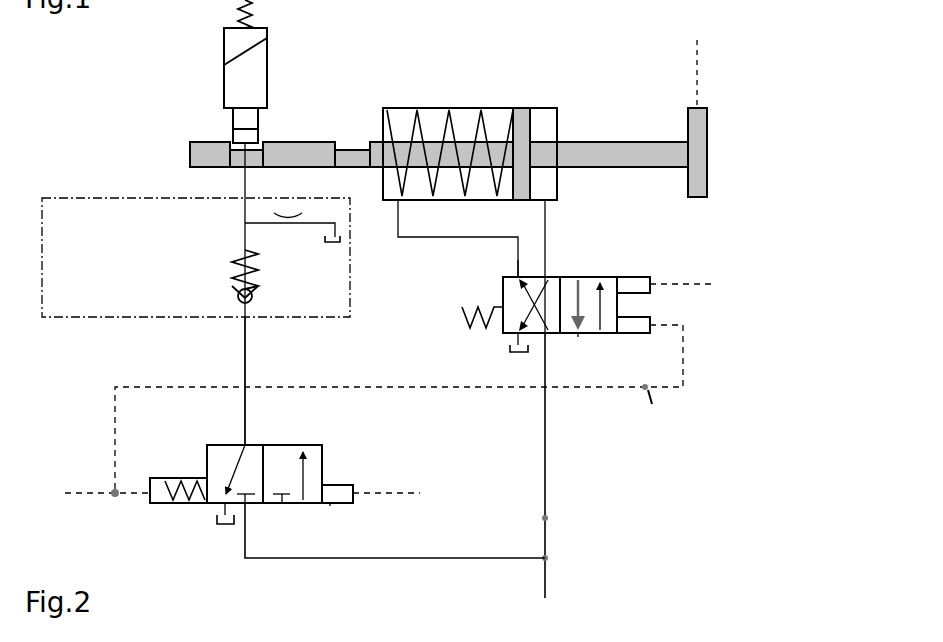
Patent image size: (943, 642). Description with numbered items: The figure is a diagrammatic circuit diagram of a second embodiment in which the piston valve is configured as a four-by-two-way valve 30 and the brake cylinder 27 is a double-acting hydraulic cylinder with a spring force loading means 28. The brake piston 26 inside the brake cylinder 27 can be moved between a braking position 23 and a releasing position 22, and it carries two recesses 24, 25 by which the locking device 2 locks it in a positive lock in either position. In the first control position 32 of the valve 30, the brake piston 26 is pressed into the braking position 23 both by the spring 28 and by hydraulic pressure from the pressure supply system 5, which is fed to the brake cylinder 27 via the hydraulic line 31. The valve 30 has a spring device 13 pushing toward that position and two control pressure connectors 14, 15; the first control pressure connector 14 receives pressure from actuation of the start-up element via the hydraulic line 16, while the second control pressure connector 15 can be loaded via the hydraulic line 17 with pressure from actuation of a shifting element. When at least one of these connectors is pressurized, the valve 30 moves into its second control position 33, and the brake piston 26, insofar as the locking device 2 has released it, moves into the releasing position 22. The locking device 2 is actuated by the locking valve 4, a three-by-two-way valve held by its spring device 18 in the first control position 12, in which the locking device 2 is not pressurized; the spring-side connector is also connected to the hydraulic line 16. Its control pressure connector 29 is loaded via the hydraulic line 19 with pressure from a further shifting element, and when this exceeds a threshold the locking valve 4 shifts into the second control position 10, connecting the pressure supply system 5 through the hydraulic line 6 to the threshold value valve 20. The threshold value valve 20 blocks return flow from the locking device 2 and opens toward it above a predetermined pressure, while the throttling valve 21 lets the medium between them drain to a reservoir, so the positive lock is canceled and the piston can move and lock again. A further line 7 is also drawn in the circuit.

The locking device 2 is at (297, 54).
The locking valve 4 is at (400, 444).
The pressure supply system 5 is at (601, 465).
The hydraulic line 6 is at (127, 381).
The hydraulic line 7 is at (584, 237).
The second control position 10 is at (326, 471).
The first control position 12 is at (175, 428).
The spring device 13 is at (429, 337).
The first control pressure connector 14 is at (712, 333).
The second control pressure connector 15 is at (665, 265).
The hydraulic line 16 is at (423, 409).
The hydraulic line 17 is at (722, 260).
The spring device 18 is at (135, 518).
The hydraulic line 19 is at (423, 471).
The threshold value valve 20 is at (196, 257).
The throttling valve 21 is at (292, 262).
The releasing position 22 is at (572, 102).
The braking position 23 is at (700, 56).
The recess 24 is at (165, 96).
The recess 25 is at (439, 83).
The brake piston 26 is at (747, 152).
The brake cylinder 27 is at (486, 112).
The spring 28 is at (465, 98).
The control pressure connector 29 is at (404, 523).
The 4/2-way valve 30 is at (639, 274).
The hydraulic line 31 is at (445, 249).
The first control position 32 is at (474, 285).
The second control position 33 is at (606, 355).